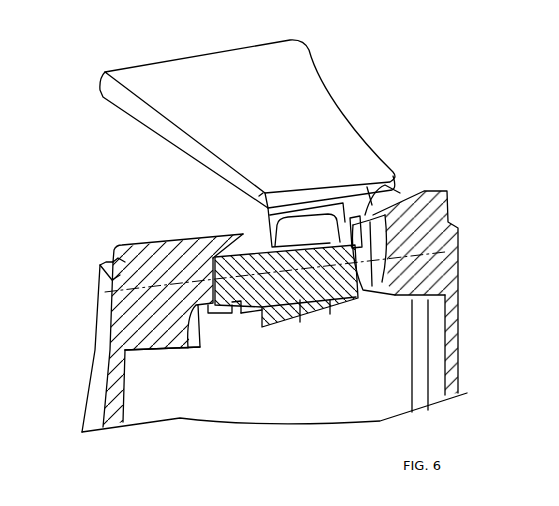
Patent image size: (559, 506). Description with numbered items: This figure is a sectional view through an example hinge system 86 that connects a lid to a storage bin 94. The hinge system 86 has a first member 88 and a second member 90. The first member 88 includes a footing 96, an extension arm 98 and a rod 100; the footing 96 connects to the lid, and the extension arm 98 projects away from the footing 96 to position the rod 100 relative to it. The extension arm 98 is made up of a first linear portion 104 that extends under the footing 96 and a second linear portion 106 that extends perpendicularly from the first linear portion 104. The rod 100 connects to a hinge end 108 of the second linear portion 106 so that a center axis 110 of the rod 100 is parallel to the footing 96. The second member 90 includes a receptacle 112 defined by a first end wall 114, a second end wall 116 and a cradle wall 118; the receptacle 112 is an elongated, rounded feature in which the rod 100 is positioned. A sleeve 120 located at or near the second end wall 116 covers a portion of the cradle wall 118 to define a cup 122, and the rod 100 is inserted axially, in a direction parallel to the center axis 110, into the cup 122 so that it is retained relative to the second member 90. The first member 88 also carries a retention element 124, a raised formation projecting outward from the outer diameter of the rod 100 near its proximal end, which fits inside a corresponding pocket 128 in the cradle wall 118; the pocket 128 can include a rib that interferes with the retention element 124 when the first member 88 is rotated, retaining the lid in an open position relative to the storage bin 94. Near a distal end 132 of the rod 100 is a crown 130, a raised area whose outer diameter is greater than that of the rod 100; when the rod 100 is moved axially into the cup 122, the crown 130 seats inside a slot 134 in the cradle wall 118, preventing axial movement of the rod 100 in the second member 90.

The hinge system 86 is at (72, 196).
The first member 88 is at (178, 68).
The second member 90 is at (99, 286).
The storage bin 94 is at (98, 386).
The footing 96 is at (188, 80).
The extension arm 98 is at (262, 211).
The rod 100 is at (300, 325).
The first linear portion 104 is at (356, 212).
The second linear portion 106 is at (316, 234).
The hinge end 108 is at (304, 228).
The center axis 110 is at (432, 268).
The receptacle 112 is at (371, 268).
The first end wall 114 is at (408, 198).
The second end wall 116 is at (198, 303).
The cradle wall 118 is at (378, 284).
The sleeve 120 is at (216, 259).
The cup 122 is at (240, 253).
The retention element 124 is at (364, 300).
The pocket 128 is at (333, 302).
The crown 130 is at (222, 314).
The distal end 132 is at (236, 315).
The slot 134 is at (247, 332).